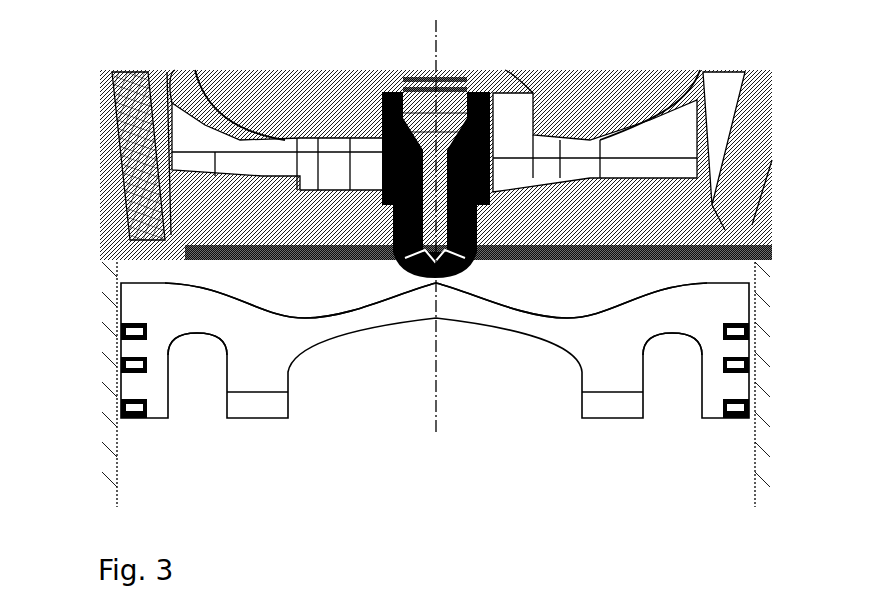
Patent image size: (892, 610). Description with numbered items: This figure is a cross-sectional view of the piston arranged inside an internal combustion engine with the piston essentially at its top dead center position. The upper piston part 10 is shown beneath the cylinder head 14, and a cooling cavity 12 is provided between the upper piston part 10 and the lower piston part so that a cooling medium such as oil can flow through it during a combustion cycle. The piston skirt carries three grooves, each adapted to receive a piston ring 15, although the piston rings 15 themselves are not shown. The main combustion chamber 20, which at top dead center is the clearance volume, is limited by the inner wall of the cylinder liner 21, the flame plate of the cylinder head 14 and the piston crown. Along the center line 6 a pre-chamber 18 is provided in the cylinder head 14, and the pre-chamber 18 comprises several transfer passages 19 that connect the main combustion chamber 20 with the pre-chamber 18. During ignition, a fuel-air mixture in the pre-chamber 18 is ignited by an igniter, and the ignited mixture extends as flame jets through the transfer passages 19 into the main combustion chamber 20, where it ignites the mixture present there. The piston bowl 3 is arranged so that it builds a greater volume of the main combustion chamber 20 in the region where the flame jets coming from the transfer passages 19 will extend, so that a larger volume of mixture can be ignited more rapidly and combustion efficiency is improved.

The piston bowl 3 is at (573, 306).
The center line 6 is at (438, 58).
The upper piston part 10 is at (732, 308).
The cooling cavity 12 is at (208, 388).
The cylinder head 14 is at (606, 231).
The piston ring 15 is at (755, 392).
The pre-chamber 18 is at (378, 115).
The transfer passages 19 is at (402, 265).
The main combustion chamber 20 is at (130, 275).
The cylinder liner 21 is at (108, 370).